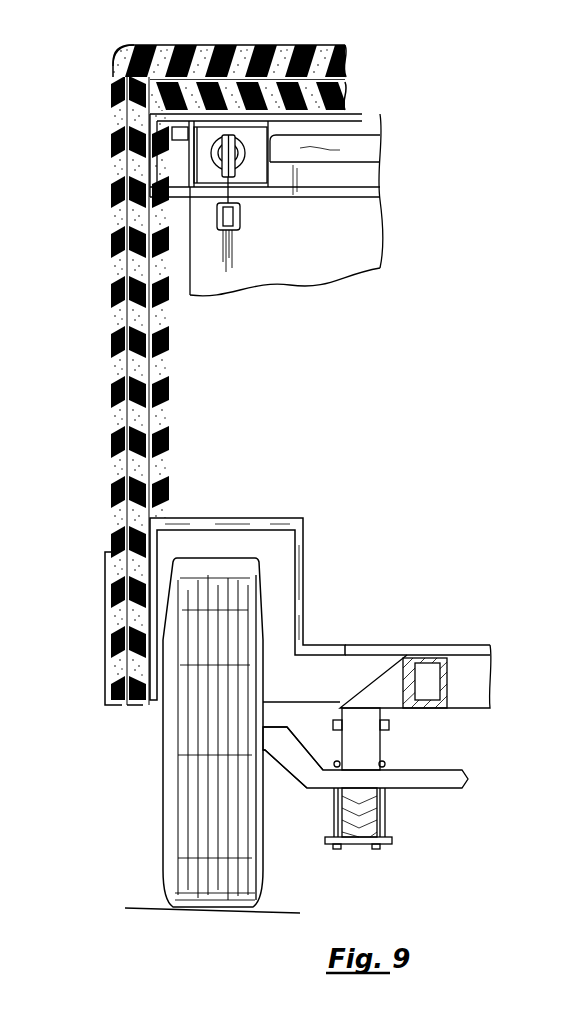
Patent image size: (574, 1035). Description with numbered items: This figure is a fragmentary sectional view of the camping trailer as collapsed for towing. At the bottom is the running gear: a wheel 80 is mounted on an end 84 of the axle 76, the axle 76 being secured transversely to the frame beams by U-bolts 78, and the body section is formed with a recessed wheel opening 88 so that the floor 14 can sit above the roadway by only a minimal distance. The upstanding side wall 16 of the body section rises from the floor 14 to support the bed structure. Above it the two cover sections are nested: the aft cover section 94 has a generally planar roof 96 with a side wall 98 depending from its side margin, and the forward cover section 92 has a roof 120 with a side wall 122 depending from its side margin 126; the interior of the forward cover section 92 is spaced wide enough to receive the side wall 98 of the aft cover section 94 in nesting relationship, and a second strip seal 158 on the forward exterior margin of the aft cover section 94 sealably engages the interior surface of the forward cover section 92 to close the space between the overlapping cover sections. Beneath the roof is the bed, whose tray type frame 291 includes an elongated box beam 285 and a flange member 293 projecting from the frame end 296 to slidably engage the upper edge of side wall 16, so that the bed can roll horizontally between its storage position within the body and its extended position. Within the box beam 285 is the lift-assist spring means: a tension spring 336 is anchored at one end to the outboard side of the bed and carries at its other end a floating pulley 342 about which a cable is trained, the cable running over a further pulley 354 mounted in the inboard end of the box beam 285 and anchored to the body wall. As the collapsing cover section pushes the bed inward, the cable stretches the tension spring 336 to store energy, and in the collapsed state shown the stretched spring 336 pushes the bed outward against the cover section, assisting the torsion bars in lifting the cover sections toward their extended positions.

The floor 14 is at (405, 652).
The side wall 16 is at (172, 375).
The axle 76 is at (425, 768).
The U-bolts 78 is at (385, 812).
The wheel 80 is at (162, 770).
The axle end 84 is at (273, 733).
The recessed wheel opening 88 is at (222, 545).
The forward cover section 92 is at (344, 62).
The aft cover section 94 is at (343, 93).
The roof 96 is at (258, 90).
The side wall 98 is at (113, 187).
The roof 120 is at (305, 65).
The side wall 122 is at (112, 318).
The side margin 126 is at (115, 73).
The second strip seal 158 is at (198, 49).
The box beam 285 is at (233, 118).
The tray type frame 291 is at (350, 127).
The flange member 293 is at (150, 113).
The frame end 296 is at (160, 162).
The tension spring 336 is at (242, 152).
The floating pulley 342 is at (238, 165).
The further pulley 354 is at (238, 228).